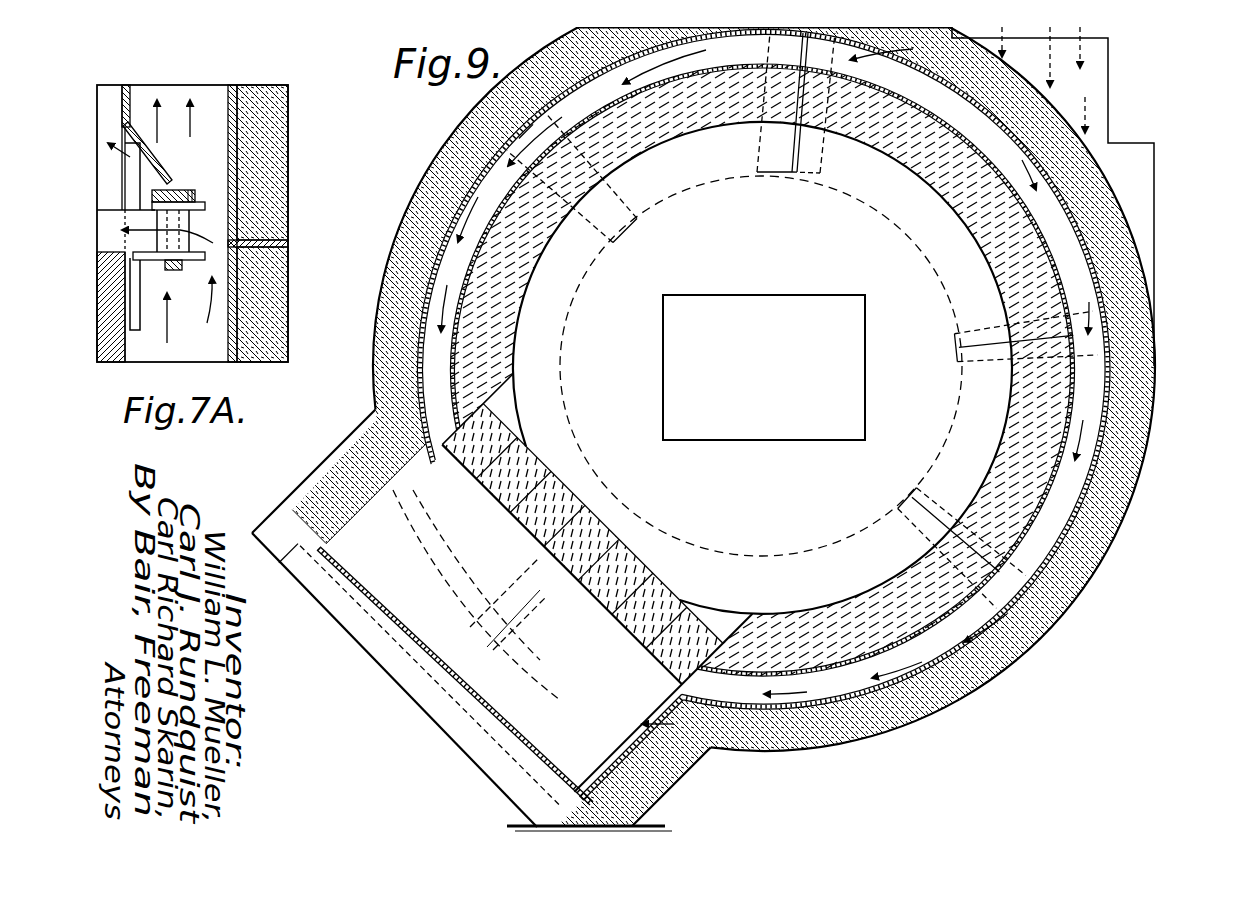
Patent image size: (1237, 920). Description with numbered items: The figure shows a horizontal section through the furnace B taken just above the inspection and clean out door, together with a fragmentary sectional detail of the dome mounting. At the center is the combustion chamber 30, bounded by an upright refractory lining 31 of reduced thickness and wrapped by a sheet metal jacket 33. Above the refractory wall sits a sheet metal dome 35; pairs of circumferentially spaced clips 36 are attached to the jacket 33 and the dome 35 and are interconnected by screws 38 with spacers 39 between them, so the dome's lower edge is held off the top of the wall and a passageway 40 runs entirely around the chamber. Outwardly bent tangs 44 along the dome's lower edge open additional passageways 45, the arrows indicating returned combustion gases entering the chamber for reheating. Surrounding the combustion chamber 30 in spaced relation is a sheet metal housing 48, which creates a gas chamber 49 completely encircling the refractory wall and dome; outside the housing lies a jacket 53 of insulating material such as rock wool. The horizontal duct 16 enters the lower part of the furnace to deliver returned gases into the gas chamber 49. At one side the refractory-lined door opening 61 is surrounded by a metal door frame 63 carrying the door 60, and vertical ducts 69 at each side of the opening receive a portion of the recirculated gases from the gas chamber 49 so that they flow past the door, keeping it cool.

In FIG. 9, the duct 16 is at (1108, 57).
In FIG. 9, the combustion chamber 30 is at (820, 499).
In FIG. 9, the refractory lining 31 is at (522, 352).
In FIG. 7A, the refractory lining 31 is at (112, 362).
In FIG. 9, the sheet metal jacket 33 is at (1078, 360).
In FIG. 7A, the sheet metal jacket 33 is at (133, 346).
In FIG. 7A, the sheet metal dome 35 is at (130, 86).
In FIG. 7A, the clips 36 is at (134, 181).
In FIG. 7A, the screws 38 is at (183, 191).
In FIG. 7A, the spacers 39 is at (190, 221).
In FIG. 7A, the passageway 40 is at (108, 232).
In FIG. 7A, the tangs 44 is at (164, 162).
In FIG. 7A, the additional passageways 45 is at (151, 227).
In FIG. 9, the sheet metal housing 48 is at (1088, 434).
In FIG. 7A, the sheet metal housing 48 is at (243, 331).
In FIG. 9, the gas chamber 49 is at (1090, 404).
In FIG. 7A, the gas chamber 49 is at (197, 343).
In FIG. 9, the jacket of insulating material 53 is at (1108, 371).
In FIG. 7A, the jacket of insulating material 53 is at (262, 258).
In FIG. 9, the door 60 is at (443, 712).
In FIG. 9, the door opening 61 is at (440, 510).
In FIG. 9, the metal door frame 63 is at (320, 587).
In FIG. 9, the vertical ducts 69 is at (363, 513).
In FIG. 9, the furnace B is at (978, 686).